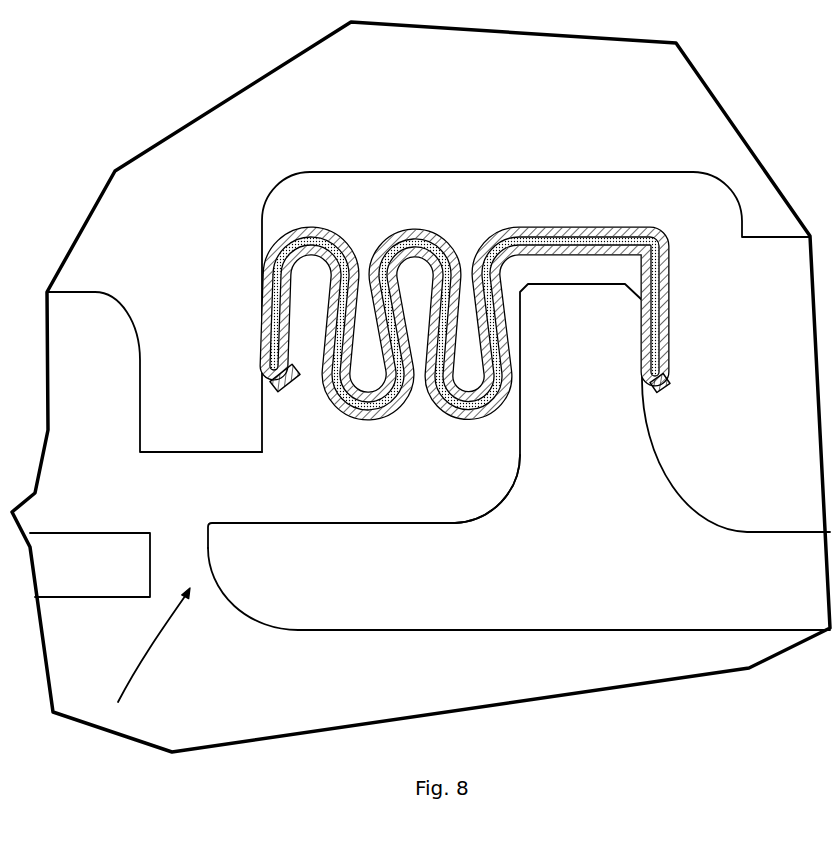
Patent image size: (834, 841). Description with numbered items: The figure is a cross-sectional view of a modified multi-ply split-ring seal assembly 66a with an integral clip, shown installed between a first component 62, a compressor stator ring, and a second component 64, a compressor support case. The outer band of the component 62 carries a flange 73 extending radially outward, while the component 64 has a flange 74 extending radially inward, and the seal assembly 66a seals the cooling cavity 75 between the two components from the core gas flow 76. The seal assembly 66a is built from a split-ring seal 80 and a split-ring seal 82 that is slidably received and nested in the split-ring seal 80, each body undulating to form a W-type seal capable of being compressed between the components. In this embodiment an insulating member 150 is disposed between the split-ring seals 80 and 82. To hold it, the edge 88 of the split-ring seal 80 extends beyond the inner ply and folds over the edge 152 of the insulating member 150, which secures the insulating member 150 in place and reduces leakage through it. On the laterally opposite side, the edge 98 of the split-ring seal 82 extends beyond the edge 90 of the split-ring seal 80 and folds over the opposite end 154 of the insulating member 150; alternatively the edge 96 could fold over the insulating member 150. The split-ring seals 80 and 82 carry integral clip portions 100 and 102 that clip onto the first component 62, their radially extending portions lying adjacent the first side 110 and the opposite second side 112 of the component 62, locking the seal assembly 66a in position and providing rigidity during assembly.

The component 62 is at (519, 457).
The component 64 is at (146, 250).
The modified seal assembly 66a is at (505, 135).
The flange 73 is at (511, 361).
The flange 74 is at (165, 339).
The cooling cavity 75 is at (533, 207).
The core gas flow 76 is at (152, 660).
The split-ring seal 80 is at (511, 340).
The split-ring seal 82 is at (511, 373).
The edge 88 is at (463, 361).
The edge 90 is at (693, 412).
The edge 96 is at (293, 366).
The edge 98 is at (463, 361).
The integral clip portion 100 is at (477, 297).
The integral clip portion 102 is at (511, 340).
The first side 110 is at (516, 465).
The second side 112 is at (463, 361).
The insulating member 150 is at (477, 337).
The edge 152 is at (272, 375).
The opposite end 154 is at (666, 392).